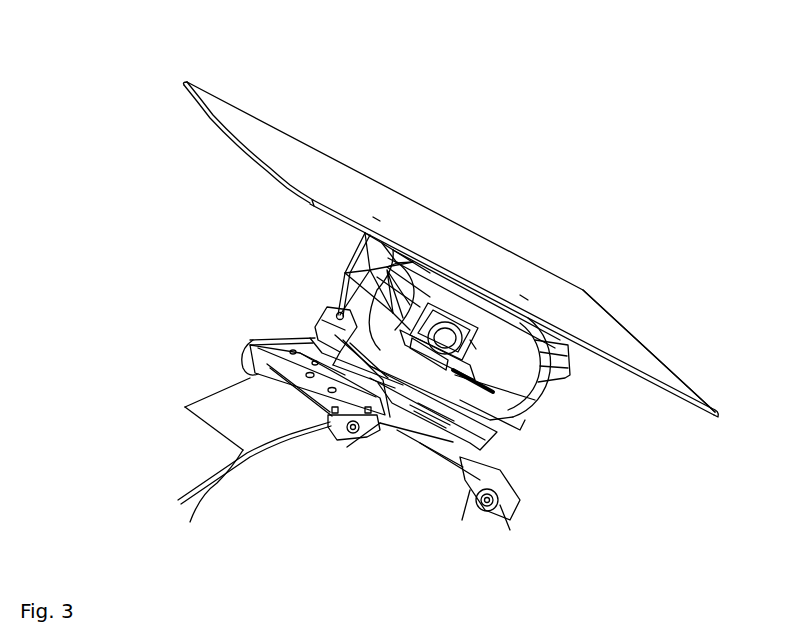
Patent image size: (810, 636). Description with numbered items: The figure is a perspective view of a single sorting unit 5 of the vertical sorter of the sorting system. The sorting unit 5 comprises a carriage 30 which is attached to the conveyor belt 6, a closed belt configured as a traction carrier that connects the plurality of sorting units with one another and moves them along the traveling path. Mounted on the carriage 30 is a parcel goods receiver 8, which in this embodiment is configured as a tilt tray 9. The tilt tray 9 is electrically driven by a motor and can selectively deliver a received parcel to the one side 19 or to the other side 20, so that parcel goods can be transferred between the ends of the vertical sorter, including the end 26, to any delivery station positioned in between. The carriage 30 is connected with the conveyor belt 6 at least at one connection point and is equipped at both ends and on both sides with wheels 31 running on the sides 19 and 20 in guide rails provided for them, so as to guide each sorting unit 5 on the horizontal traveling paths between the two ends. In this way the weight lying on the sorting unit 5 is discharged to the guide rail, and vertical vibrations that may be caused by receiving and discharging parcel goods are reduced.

The sorting unit 5 is at (131, 87).
The parcel goods receiver 8 is at (374, 145).
The tilt tray 9 is at (418, 168).
The other side 20 is at (572, 268).
The one side 19 is at (705, 425).
The wheels 31 is at (246, 330).
The conveyor belt 6 is at (185, 423).
The end of the vertical sorter 26 is at (257, 507).
The carriage 30 is at (520, 457).